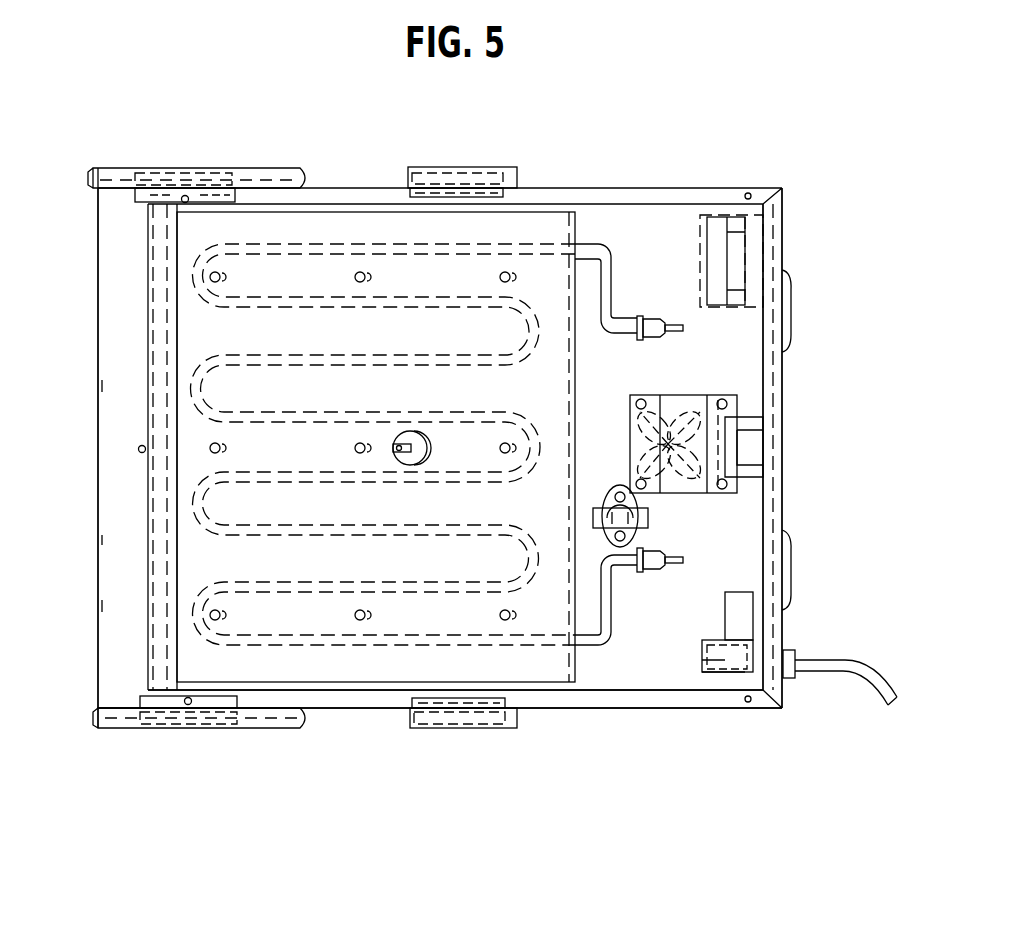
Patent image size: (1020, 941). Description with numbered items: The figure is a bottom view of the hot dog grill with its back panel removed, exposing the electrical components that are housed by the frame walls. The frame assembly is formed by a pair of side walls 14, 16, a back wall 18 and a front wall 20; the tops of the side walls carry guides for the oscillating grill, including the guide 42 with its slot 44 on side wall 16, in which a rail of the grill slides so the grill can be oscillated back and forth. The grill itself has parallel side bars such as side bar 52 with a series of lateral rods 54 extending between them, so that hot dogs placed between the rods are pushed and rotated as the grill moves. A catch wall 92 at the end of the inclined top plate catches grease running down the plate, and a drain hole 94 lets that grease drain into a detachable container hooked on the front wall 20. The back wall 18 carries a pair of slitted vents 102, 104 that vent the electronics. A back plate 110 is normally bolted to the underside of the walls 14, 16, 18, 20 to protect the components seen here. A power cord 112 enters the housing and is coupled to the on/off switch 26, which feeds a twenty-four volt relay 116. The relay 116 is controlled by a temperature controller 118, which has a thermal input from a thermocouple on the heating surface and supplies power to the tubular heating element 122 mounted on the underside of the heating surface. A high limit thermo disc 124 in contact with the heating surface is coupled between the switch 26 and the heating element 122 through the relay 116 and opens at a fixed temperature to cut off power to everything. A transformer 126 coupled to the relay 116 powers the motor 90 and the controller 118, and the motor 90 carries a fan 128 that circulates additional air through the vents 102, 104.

The side wall 14 is at (672, 708).
The side wall 16 is at (681, 188).
The back wall 18 is at (781, 420).
The front wall 20 is at (148, 612).
The on/off switch 26 is at (731, 672).
The guide 42 is at (268, 168).
The slot 44 is at (231, 728).
The side bar 52 is at (397, 167).
The lateral rods 54 is at (400, 728).
The motor 90 is at (693, 490).
The catch wall 92 is at (103, 556).
The drain hole 94 is at (139, 451).
The vent 102 is at (788, 324).
The vent 104 is at (790, 592).
The back plate 110 is at (583, 215).
The power cord 112 is at (873, 692).
The relay 116 is at (753, 627).
The temperature controller 118 is at (735, 273).
The heating element 122 is at (613, 268).
The high limit thermo disc 124 is at (637, 537).
The transformer 126 is at (750, 452).
The fan 128 is at (700, 395).